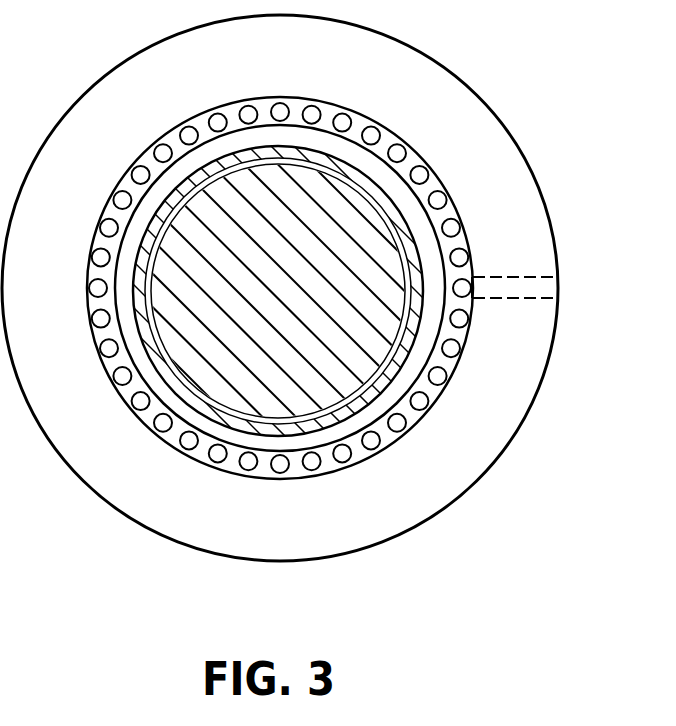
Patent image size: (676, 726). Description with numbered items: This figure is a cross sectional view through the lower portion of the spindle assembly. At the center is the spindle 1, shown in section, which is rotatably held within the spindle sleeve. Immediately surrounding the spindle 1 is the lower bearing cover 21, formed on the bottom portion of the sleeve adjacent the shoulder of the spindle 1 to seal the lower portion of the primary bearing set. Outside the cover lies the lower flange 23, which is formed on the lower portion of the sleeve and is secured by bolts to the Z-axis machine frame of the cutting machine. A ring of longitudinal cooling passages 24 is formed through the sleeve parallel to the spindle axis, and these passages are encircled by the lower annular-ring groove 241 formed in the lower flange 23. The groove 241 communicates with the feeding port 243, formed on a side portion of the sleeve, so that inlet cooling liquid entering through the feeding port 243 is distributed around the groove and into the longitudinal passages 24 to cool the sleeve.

The spindle 1 is at (342, 197).
The lower bearing cover 21 is at (385, 380).
The lower flange 23 is at (488, 134).
The longitudinal cooling passages 24 is at (458, 318).
The lower annular-ring groove 241 is at (471, 240).
The feeding port 243 is at (551, 288).